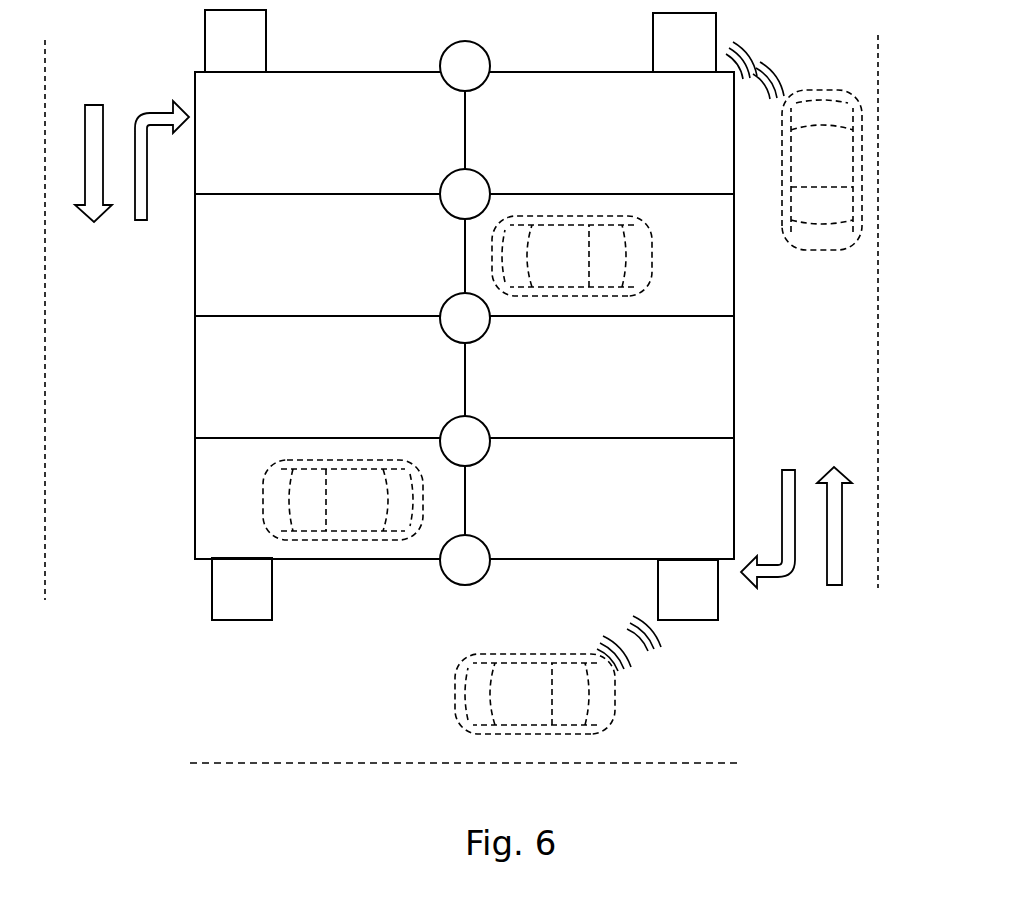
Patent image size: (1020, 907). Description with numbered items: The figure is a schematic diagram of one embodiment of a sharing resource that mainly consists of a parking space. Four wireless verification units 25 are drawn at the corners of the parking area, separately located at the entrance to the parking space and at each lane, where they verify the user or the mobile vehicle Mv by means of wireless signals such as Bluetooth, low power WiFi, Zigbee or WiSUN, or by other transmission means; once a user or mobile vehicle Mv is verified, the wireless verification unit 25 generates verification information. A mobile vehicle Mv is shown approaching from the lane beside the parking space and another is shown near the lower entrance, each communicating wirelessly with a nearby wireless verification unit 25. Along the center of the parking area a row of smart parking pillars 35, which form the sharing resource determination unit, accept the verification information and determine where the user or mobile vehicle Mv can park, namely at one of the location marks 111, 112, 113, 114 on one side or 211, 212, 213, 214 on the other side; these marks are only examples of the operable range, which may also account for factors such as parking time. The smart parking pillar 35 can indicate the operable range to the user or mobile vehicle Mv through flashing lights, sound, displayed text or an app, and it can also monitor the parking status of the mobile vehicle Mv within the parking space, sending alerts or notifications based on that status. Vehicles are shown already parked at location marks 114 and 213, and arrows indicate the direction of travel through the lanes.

The wireless verification unit 25 is at (258, 58).
The smart parking pillar 35 is at (465, 72).
The location mark 111 is at (330, 133).
The location mark 112 is at (330, 255).
The location mark 113 is at (330, 377).
The location mark 114 is at (330, 498).
The location mark 211 is at (599, 498).
The location mark 212 is at (599, 377).
The location mark 213 is at (599, 255).
The location mark 214 is at (599, 133).
The mobile vehicle Mv is at (815, 117).